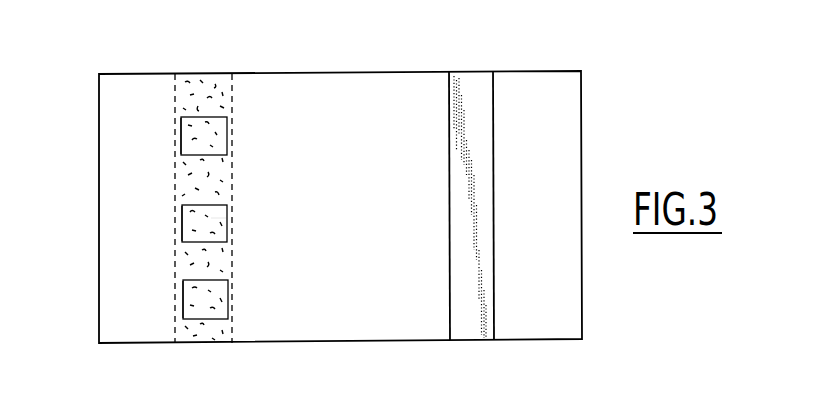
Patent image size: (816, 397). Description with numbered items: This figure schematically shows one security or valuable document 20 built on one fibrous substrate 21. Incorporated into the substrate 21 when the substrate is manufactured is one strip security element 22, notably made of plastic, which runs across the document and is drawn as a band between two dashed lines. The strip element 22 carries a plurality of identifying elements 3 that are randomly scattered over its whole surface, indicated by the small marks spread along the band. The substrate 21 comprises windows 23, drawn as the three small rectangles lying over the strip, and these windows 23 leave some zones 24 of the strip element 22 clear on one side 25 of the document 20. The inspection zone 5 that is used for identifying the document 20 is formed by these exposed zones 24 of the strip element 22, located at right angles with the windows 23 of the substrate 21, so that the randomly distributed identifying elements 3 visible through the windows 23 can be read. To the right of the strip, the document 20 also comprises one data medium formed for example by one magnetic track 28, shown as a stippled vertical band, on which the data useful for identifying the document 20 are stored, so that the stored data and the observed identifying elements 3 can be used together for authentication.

The identifying elements 3 is at (194, 100).
The inspection zone 5 is at (226, 218).
The document 20 is at (605, 147).
The fibrous substrate 21 is at (557, 291).
The strip security element 22 is at (228, 86).
The windows 23 is at (228, 142).
The exposed zones 24 is at (182, 141).
The side 25 is at (422, 112).
The magnetic track 28 is at (466, 155).